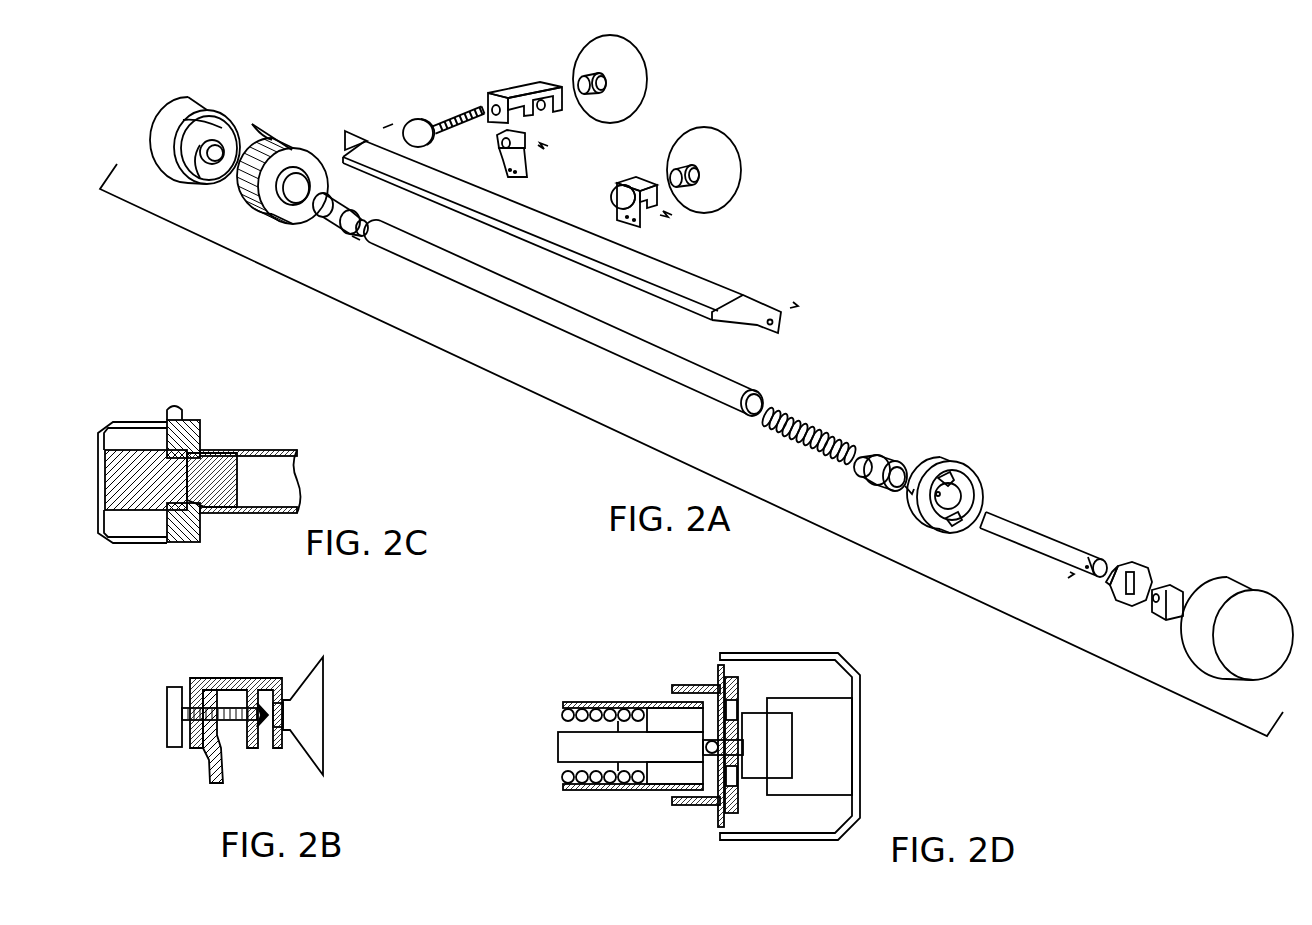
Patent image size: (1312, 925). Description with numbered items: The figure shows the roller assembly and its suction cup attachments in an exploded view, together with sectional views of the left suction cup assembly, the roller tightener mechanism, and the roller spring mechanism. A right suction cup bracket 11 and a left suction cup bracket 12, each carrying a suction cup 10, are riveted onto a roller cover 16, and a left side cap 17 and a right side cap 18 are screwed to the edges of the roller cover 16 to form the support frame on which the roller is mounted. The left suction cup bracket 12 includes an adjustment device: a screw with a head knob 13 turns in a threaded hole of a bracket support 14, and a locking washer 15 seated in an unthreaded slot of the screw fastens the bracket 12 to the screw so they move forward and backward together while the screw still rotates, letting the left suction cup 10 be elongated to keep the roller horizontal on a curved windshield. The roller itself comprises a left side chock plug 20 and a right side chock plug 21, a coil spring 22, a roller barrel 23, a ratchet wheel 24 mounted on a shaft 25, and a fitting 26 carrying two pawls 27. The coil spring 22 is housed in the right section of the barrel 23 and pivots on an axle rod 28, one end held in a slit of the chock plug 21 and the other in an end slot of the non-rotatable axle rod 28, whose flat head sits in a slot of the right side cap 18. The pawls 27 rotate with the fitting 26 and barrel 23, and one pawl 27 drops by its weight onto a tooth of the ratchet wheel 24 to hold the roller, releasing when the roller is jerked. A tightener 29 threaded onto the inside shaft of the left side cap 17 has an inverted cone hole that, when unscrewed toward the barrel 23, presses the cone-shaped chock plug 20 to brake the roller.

In FIG. 2A, the suction cup 10 is at (657, 124).
In FIG. 2B, the suction cup 10 is at (312, 730).
In FIG. 2A, the right suction cup bracket 11 is at (634, 180).
In FIG. 2A, the left suction cup bracket 12 is at (508, 90).
In FIG. 2B, the left suction cup bracket 12 is at (205, 686).
In FIG. 2A, the adjustment head knob with screw 13 is at (415, 125).
In FIG. 2B, the adjustment head knob with screw 13 is at (170, 700).
In FIG. 2A, the bracket support 14 is at (525, 145).
In FIG. 2B, the bracket support 14 is at (210, 772).
In FIG. 2B, the locking washer 15 is at (262, 728).
In FIG. 2A, the roller cover 16 is at (677, 273).
In FIG. 2A, the left side cap 17 is at (178, 110).
In FIG. 2C, the left side cap 17 is at (140, 420).
In FIG. 2A, the right side cap 18 is at (1243, 590).
In FIG. 2D, the right side cap 18 is at (848, 723).
In FIG. 2A, the left side chock plug 20 is at (326, 214).
In FIG. 2C, the left side chock plug 20 is at (205, 500).
In FIG. 2A, the right side chock plug 21 is at (883, 455).
In FIG. 2D, the right side chock plug 21 is at (667, 717).
In FIG. 2A, the coil spring 22 is at (798, 423).
In FIG. 2D, the coil spring 22 is at (567, 712).
In FIG. 2A, the roller barrel 23 is at (425, 262).
In FIG. 2C, the roller barrel 23 is at (270, 450).
In FIG. 2D, the roller barrel 23 is at (607, 791).
In FIG. 2A, the ratchet wheel 24 is at (1132, 562).
In FIG. 2D, the ratchet wheel 24 is at (740, 782).
In FIG. 2A, the shaft 25 is at (1170, 588).
In FIG. 2D, the shaft 25 is at (755, 717).
In FIG. 2A, the fitting 26 is at (982, 482).
In FIG. 2D, the fitting 26 is at (693, 806).
In FIG. 2A, the pawls 27 is at (943, 477).
In FIG. 2D, the pawls 27 is at (738, 806).
In FIG. 2A, the axle rod 28 is at (1033, 533).
In FIG. 2D, the axle rod 28 is at (558, 750).
In FIG. 2A, the tightener 29 is at (287, 152).
In FIG. 2C, the tightener 29 is at (190, 422).